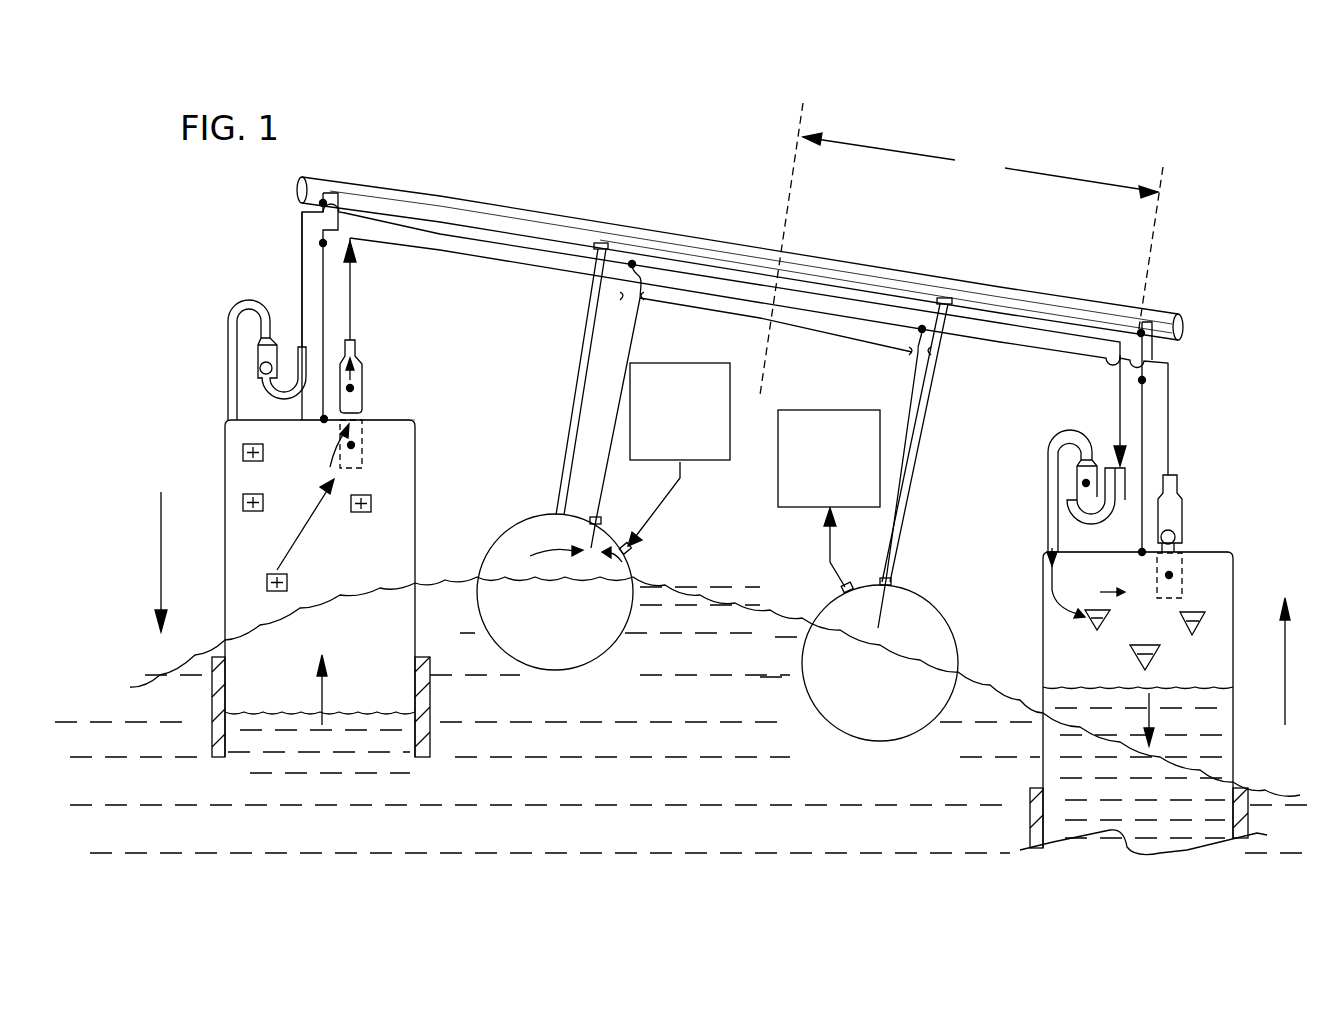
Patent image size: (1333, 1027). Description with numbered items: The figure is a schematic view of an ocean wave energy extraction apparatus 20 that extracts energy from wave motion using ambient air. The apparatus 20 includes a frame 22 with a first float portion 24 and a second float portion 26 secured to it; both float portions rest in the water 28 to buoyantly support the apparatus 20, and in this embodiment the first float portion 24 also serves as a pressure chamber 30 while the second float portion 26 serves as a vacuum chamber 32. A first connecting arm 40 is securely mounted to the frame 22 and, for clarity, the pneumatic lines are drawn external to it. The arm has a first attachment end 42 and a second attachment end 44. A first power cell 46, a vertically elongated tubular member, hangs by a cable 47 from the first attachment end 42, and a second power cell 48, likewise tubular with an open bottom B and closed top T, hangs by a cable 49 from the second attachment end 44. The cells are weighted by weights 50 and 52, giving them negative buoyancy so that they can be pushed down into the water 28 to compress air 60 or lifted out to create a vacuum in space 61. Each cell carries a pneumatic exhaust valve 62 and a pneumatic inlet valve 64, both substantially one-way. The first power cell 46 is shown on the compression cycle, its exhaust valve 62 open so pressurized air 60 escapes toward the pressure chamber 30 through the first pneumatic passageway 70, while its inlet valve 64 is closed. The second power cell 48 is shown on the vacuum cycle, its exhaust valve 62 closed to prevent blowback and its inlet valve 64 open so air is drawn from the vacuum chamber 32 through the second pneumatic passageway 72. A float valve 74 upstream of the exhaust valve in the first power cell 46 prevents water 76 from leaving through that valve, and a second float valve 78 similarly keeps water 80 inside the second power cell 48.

The ocean wave energy extraction apparatus 20 is at (540, 166).
The frame 22 is at (588, 316).
The first float portion 24 is at (931, 597).
The second float portion 26 is at (530, 513).
The water 28 is at (727, 592).
The pressure chamber 30 is at (858, 663).
The vacuum chamber 32 is at (573, 600).
The first connecting arm 40 is at (851, 272).
The first attachment end 42 is at (352, 180).
The second attachment end 44 is at (1140, 330).
The first power cell 46 is at (416, 452).
The cable 47 is at (325, 296).
The second power cell 48 is at (1210, 550).
The cable 49 is at (1138, 410).
The weight 50 is at (432, 712).
The weight 52 is at (1035, 840).
The air 60 is at (365, 560).
The space 61 is at (1118, 584).
The pneumatic exhaust valve 62 is at (363, 385).
The pneumatic inlet valve 64 is at (252, 346).
The first pneumatic passageway 70 is at (910, 410).
The second pneumatic passageway 72 is at (628, 343).
The float valve 74 is at (363, 450).
The water 76 is at (340, 712).
The second float valve 78 is at (1182, 587).
The water 80 is at (1182, 688).
The open bottom B is at (417, 757).
The closed top T is at (380, 418).